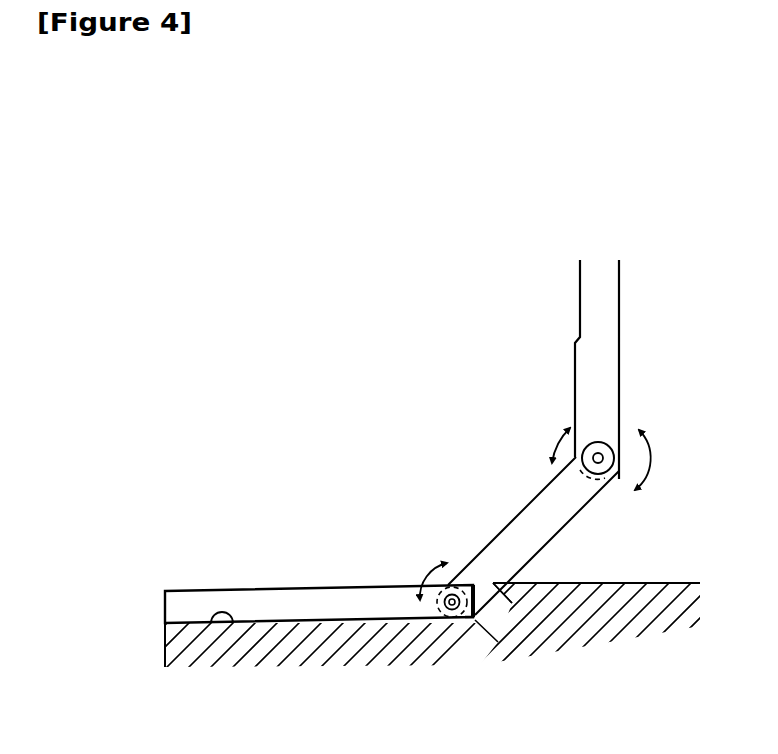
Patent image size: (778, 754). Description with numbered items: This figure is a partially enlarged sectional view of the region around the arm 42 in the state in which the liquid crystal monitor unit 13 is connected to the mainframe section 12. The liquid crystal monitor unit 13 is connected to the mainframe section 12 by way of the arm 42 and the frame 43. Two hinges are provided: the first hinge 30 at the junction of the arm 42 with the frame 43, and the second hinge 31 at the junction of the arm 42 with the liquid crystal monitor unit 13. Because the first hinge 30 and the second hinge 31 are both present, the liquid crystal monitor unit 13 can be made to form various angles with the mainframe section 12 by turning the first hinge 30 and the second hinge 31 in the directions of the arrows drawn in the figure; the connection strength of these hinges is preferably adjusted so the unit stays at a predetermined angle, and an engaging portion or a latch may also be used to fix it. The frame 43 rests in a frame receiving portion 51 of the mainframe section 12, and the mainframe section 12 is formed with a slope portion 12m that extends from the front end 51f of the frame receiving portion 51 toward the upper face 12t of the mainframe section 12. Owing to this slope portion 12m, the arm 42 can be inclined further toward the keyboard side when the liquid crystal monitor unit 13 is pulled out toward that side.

The mainframe section 12 is at (622, 615).
The upper face of the mainframe section 12t is at (670, 582).
The slope portion 12m is at (503, 613).
The liquid crystal monitor unit 13 is at (605, 333).
The first hinge 30 is at (437, 620).
The second hinge 31 is at (600, 452).
The arm 42 is at (535, 511).
The frame 43 is at (240, 598).
The frame receiving portion 51 is at (213, 614).
The front end of the frame receiving portion 51f is at (478, 620).